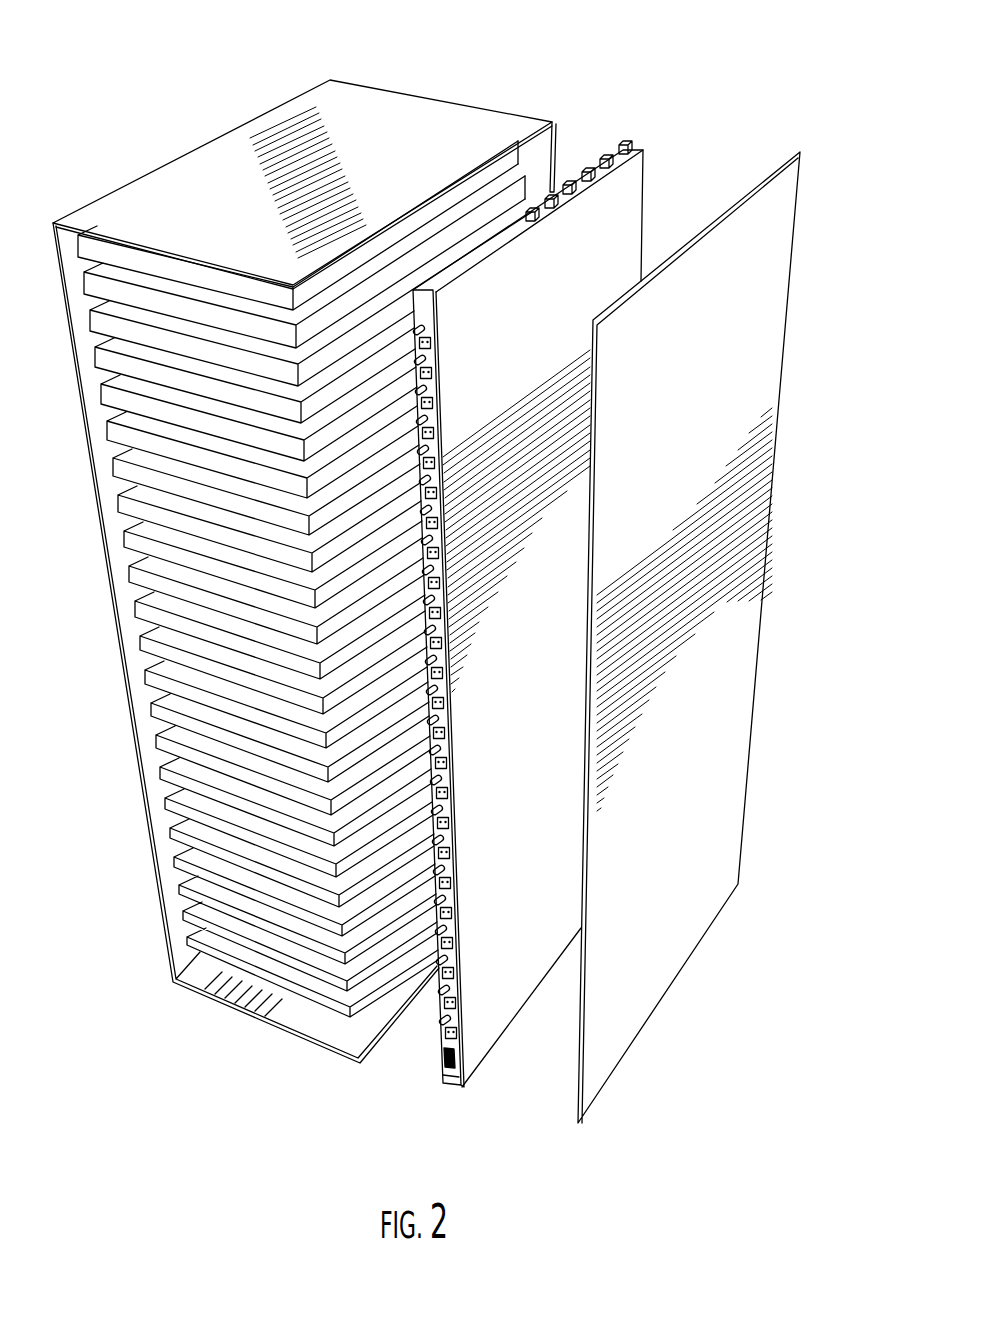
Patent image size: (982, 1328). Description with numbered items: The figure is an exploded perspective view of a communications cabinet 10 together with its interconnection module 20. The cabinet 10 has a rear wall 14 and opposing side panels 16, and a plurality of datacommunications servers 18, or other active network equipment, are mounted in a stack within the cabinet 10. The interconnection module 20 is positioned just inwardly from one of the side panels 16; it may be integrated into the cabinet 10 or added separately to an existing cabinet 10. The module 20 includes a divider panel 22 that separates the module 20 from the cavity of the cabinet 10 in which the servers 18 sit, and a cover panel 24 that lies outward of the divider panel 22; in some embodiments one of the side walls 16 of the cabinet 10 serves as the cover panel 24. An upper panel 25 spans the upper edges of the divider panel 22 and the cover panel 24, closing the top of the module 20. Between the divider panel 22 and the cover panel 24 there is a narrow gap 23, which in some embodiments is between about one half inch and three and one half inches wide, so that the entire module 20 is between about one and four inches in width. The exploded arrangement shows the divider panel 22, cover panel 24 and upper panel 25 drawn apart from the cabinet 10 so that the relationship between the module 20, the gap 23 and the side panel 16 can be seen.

The communications cabinet 10 is at (220, 80).
The rear wall 14 is at (542, 162).
The side panel 16 is at (748, 625).
The datacommunications servers 18 is at (157, 757).
The interconnection module 20 is at (623, 103).
The divider panel 22 is at (443, 1040).
The gap 23 is at (447, 1088).
The cover panel 24 is at (488, 1023).
The upper panel 25 is at (513, 232).